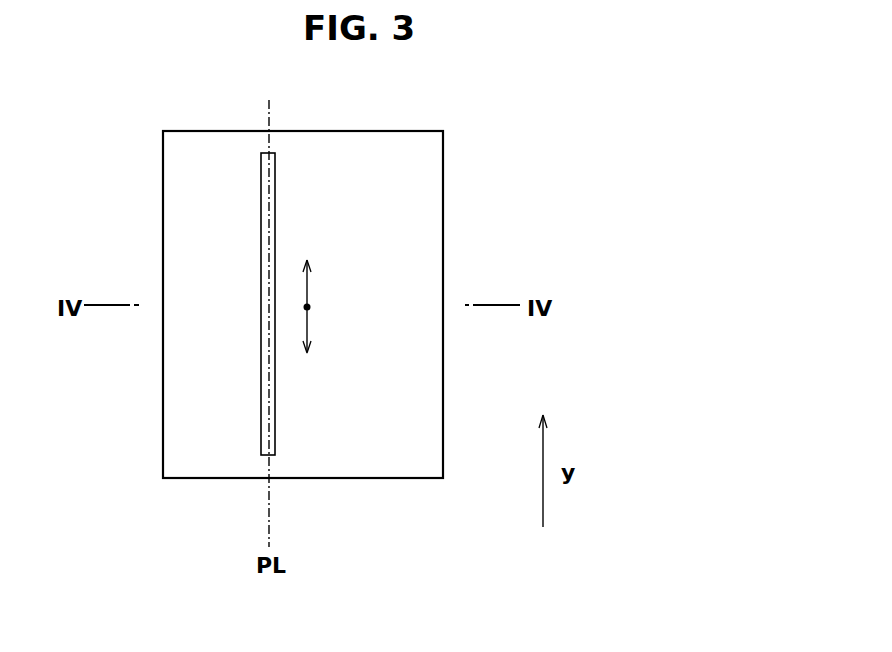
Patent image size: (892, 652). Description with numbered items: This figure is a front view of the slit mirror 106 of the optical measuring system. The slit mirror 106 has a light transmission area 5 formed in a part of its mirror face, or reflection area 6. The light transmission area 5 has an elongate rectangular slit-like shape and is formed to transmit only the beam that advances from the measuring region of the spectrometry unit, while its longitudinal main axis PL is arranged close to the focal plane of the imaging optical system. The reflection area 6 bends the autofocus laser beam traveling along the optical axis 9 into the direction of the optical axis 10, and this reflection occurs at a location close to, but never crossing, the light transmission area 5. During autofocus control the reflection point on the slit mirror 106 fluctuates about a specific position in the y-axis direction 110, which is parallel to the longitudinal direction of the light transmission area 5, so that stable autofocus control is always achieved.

The slit mirror 106 is at (428, 114).
The mirror face (reflection area) 6 is at (443, 185).
The light transmission area 5 is at (275, 432).
The optical axis 9 is at (416, 309).
The optical axis 10 is at (307, 307).
The y-axis direction 110 is at (308, 325).